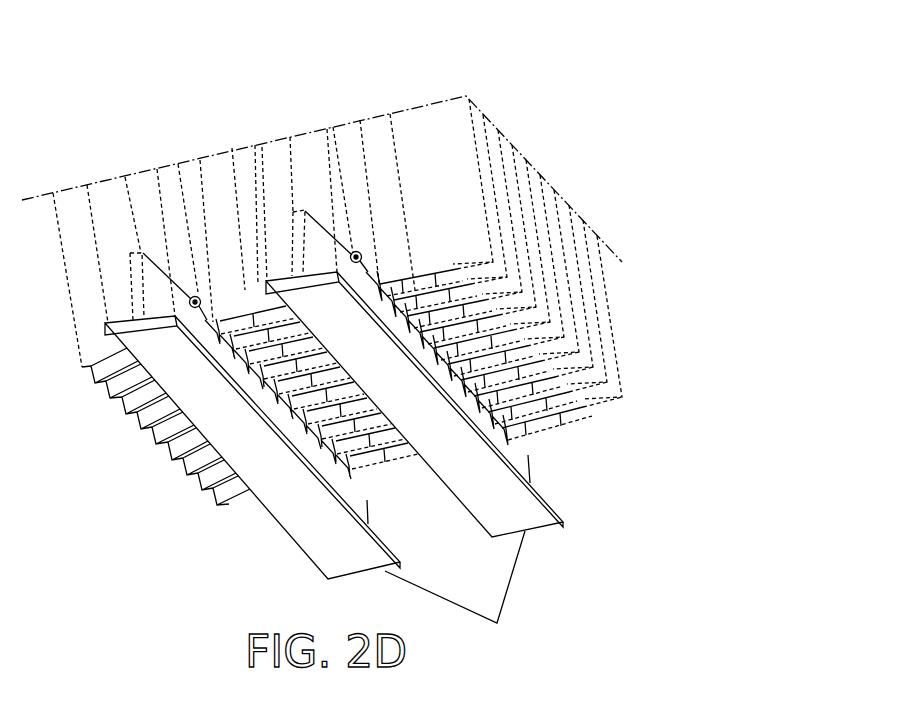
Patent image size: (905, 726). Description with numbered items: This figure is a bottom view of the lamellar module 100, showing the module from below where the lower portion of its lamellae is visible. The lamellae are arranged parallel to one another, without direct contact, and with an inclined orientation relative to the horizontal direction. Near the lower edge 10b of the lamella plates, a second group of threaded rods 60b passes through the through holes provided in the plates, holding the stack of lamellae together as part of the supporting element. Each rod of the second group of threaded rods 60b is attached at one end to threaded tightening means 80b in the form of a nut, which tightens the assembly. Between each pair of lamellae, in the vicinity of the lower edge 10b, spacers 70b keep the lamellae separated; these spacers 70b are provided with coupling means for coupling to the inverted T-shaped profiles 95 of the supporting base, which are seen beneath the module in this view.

The lamellar module 100 is at (640, 287).
The lower edge 10b is at (598, 403).
The second group of threaded rods 60b is at (194, 296).
The spacers 70b is at (258, 320).
The threaded tightening means 80b is at (200, 294).
The inverted T-shaped profiles 95 is at (448, 556).